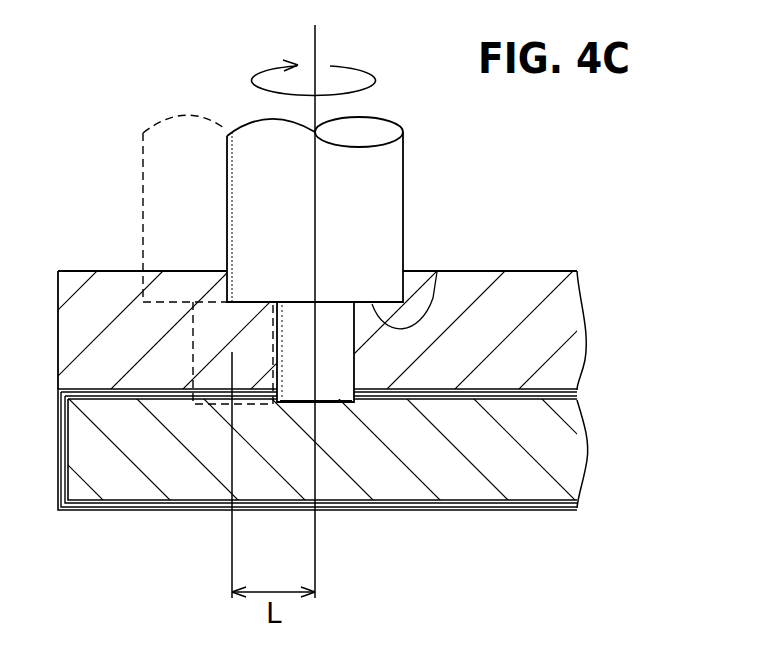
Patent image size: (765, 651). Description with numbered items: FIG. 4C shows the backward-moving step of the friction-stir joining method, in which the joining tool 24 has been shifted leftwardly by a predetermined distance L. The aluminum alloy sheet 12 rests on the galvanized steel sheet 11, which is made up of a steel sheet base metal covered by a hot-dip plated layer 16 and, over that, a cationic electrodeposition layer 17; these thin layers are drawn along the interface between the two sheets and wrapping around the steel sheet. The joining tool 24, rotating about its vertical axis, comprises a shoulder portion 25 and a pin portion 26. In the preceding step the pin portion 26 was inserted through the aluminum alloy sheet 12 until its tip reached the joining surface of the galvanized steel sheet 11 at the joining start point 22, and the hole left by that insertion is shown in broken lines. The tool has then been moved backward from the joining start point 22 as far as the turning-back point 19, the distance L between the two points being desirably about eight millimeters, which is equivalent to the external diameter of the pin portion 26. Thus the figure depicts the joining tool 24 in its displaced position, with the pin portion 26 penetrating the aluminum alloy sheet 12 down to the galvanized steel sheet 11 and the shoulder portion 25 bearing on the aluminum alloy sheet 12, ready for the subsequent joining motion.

The galvanized steel sheet 11 is at (568, 454).
The aluminum alloy sheet 12 is at (513, 292).
The plated layer 16 is at (578, 398).
The cationic electrodeposition layer 17 is at (580, 390).
The turning-back point 19 is at (232, 556).
The joining start point 22 is at (315, 48).
The joining tool 24 is at (405, 177).
The shoulder portion 25 is at (357, 352).
The pin portion 26 is at (337, 390).